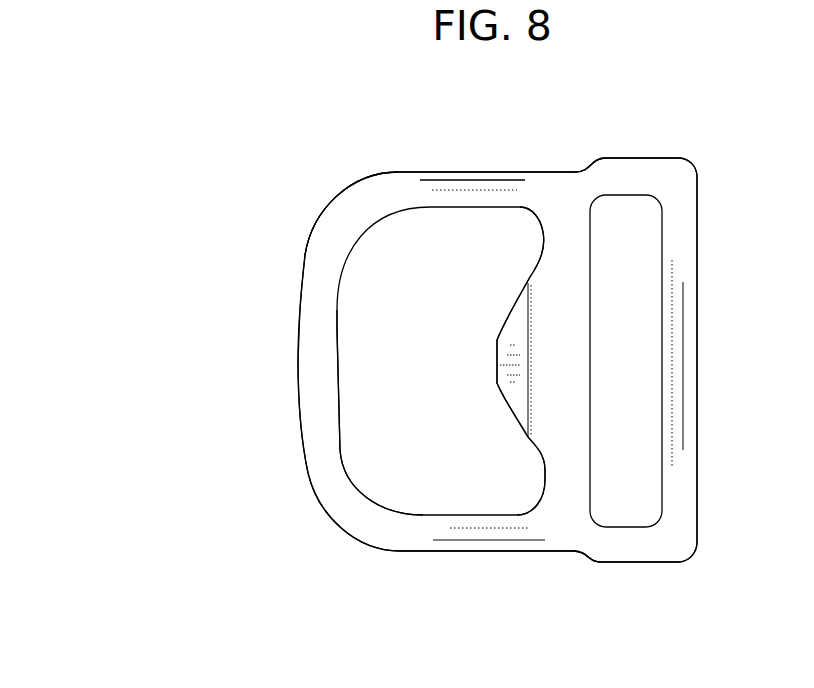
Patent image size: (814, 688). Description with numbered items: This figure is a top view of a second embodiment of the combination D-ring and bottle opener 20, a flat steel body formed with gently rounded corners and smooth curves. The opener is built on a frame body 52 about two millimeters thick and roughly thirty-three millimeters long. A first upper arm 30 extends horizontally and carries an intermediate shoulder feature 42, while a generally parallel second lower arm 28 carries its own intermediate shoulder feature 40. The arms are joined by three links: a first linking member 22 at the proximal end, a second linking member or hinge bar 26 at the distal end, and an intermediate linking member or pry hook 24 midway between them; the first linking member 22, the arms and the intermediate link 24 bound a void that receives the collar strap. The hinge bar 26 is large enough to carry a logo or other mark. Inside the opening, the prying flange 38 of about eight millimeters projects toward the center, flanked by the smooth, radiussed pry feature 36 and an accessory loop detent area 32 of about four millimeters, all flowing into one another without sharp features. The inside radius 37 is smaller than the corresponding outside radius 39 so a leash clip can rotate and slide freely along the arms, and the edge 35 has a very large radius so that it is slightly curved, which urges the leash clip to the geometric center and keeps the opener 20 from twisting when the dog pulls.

The combination D-ring and bottle opener 20 is at (144, 628).
The first linking member 22 is at (687, 254).
The intermediate linking member or pry hook 24 is at (560, 402).
The second linking member or hinge bar 26 is at (308, 343).
The second (lower) arm 28 is at (477, 545).
The first (upper) arm 30 is at (418, 178).
The accessory loop detent area 32 is at (521, 471).
The edge 35 is at (338, 382).
The radiussed pry feature 36 is at (479, 361).
The inside radius 37 is at (400, 243).
The prying flange 38 is at (502, 343).
The outside radius 39 is at (266, 179).
The intermediate shoulder feature 40 is at (554, 575).
The intermediate shoulder feature 42 is at (564, 140).
The frame body 52 is at (538, 203).